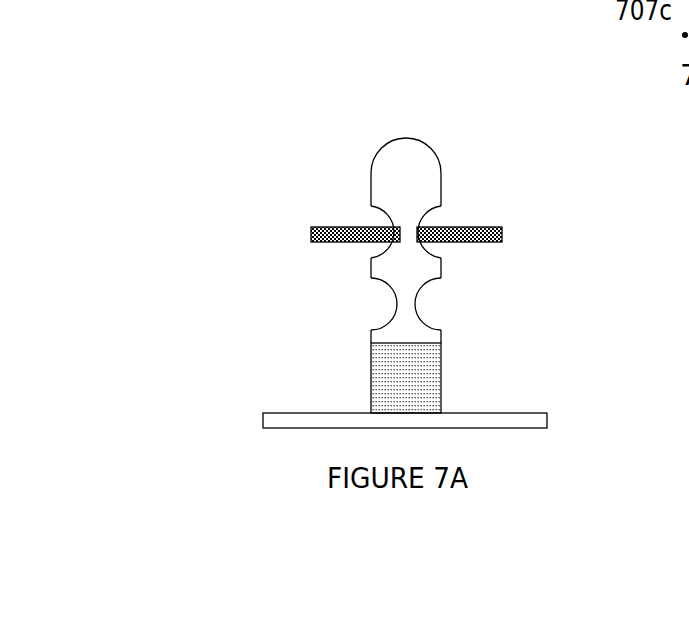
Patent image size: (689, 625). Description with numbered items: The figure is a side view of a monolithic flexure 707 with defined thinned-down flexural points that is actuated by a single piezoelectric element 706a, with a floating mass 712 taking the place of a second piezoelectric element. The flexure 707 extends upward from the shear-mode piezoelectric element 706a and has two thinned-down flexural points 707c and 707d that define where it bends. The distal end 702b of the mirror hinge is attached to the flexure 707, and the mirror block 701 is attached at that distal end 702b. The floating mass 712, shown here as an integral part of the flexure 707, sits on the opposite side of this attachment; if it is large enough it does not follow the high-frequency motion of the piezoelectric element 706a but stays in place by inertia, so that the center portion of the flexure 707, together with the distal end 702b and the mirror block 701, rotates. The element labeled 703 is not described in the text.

The floating mass 712 is at (404, 170).
The thinned-down flexural point 707c is at (394, 227).
The flexure 707 is at (411, 272).
The thinned-down flexural point 707d is at (392, 312).
The mirror block 701 is at (511, 232).
The distal end of the hinge 702b is at (463, 226).
The piezoelectric element 706a is at (454, 377).
The base plate 703 is at (557, 420).